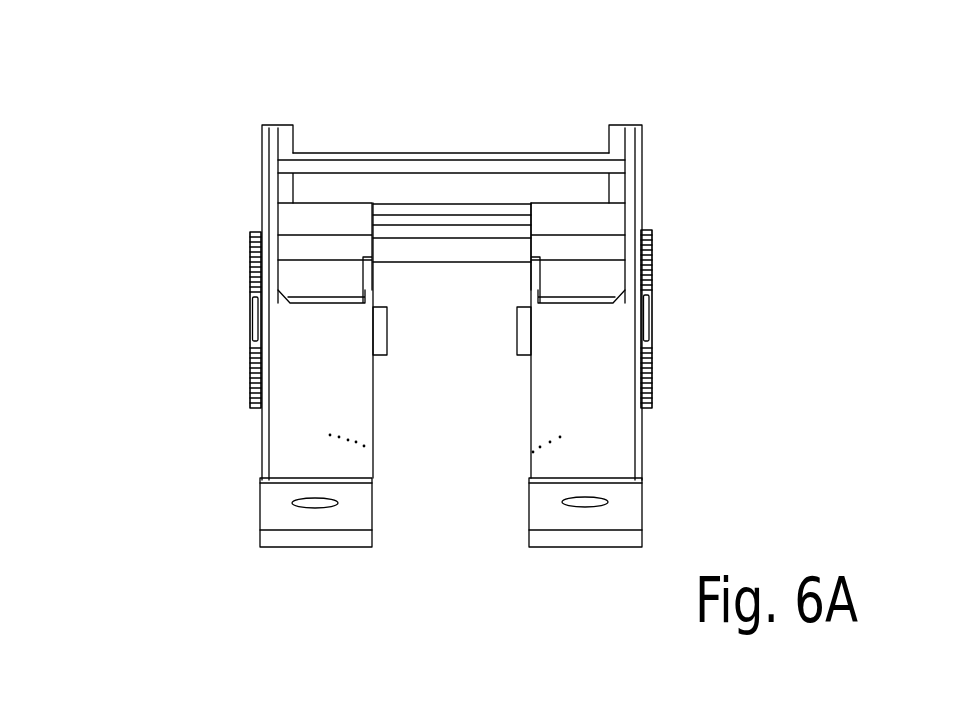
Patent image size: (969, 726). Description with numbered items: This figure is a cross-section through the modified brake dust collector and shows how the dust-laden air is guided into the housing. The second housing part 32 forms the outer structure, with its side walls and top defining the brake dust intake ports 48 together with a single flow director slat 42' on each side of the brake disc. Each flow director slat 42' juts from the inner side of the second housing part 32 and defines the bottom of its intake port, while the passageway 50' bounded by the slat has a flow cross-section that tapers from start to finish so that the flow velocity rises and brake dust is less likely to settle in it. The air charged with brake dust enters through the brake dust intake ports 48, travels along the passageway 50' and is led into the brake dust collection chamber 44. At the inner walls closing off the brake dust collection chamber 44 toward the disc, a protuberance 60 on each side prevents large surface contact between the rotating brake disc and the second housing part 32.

The second housing part 32 is at (190, 285).
The passageway 50' is at (455, 104).
The flow director slat 42' is at (451, 305).
The brake dust intake port 48 is at (352, 268).
The protuberance 60 is at (382, 340).
The brake dust collection chamber 44 is at (372, 450).